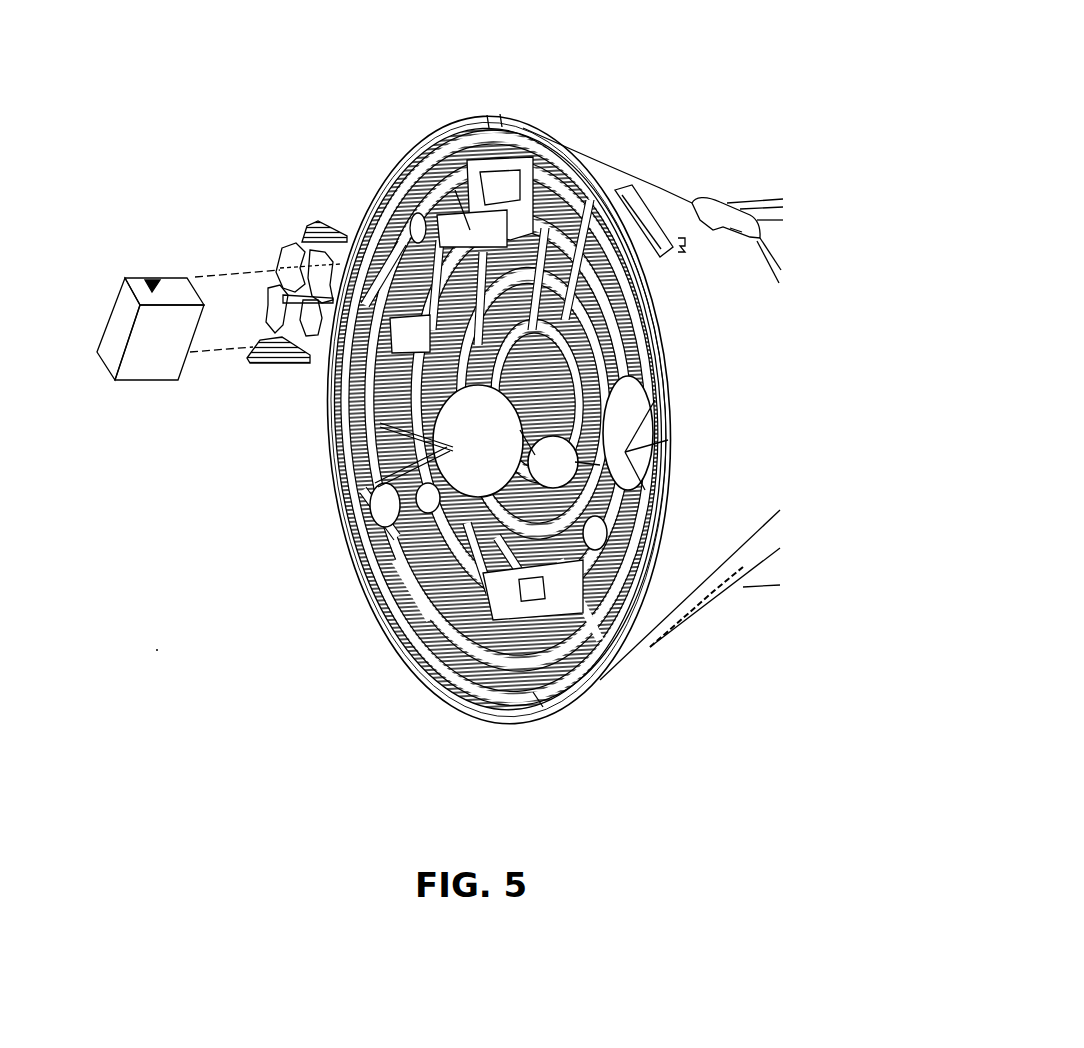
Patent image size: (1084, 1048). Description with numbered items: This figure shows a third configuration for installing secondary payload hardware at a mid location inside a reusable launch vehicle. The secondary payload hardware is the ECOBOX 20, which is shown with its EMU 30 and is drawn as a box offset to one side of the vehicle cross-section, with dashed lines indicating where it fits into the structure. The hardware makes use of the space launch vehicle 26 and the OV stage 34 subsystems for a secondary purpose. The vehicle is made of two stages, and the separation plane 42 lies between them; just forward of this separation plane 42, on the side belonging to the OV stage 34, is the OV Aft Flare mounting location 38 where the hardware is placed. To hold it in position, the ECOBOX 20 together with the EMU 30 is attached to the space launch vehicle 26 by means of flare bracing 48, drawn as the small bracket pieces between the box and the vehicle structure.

The ECOBOX 20 is at (113, 318).
The space launch vehicle 26 is at (738, 530).
The EMU 30 is at (428, 165).
The OV stage 34 is at (637, 653).
The OV Aft Flare mounting location 38 is at (583, 190).
The separation plane 42 is at (507, 120).
The flare bracing 48 is at (312, 218).